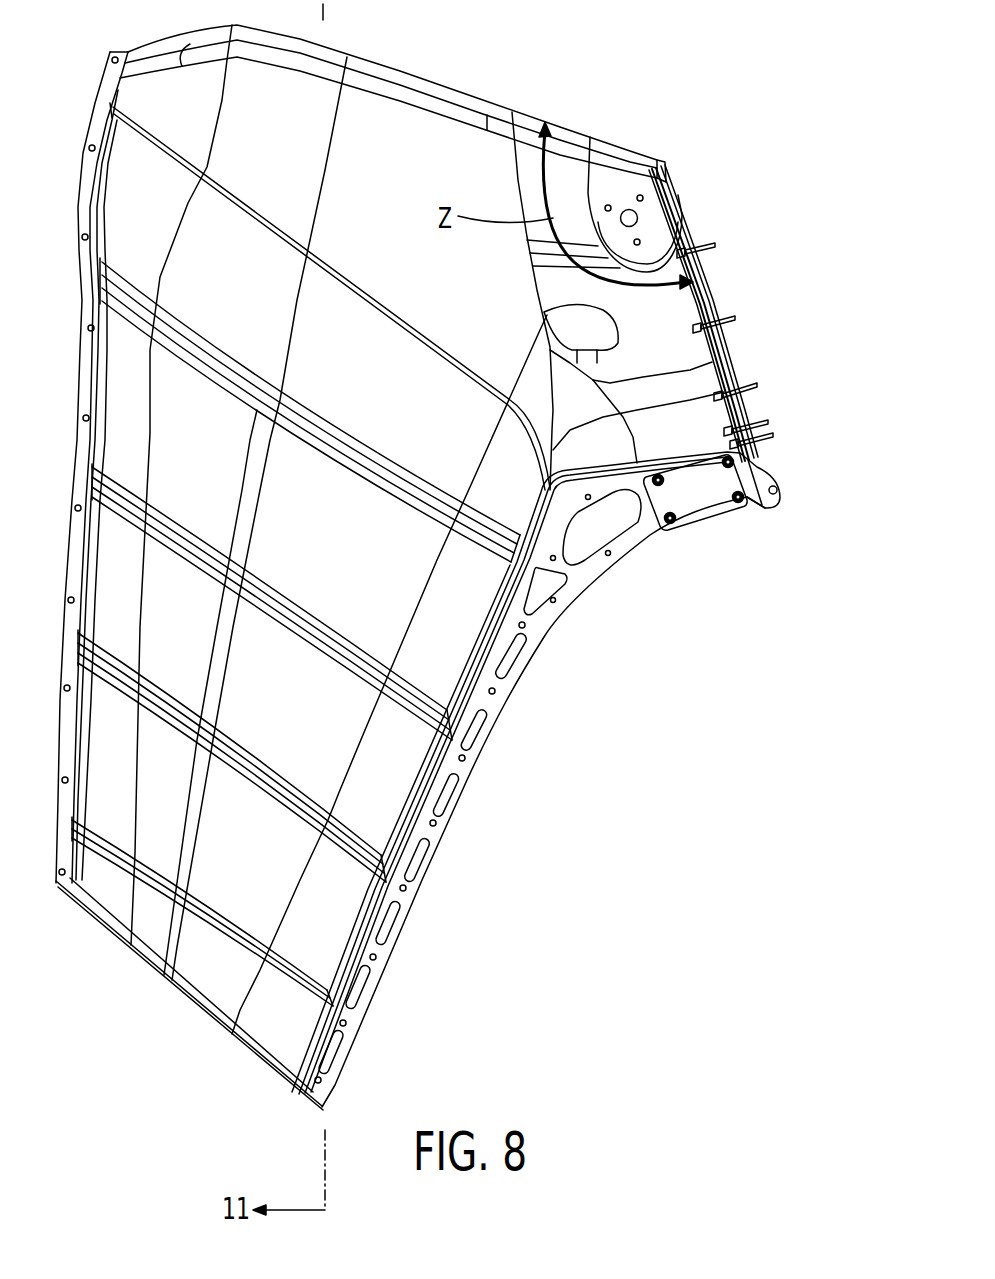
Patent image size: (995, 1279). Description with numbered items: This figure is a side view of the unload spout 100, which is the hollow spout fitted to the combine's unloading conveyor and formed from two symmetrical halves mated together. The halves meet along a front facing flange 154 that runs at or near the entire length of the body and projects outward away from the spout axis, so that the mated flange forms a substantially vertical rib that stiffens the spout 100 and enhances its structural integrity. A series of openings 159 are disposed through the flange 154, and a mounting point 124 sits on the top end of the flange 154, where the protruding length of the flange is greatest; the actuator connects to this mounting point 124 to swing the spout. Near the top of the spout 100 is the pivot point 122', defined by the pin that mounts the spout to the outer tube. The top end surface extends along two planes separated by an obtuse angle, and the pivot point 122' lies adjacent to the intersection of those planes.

The unload spout 100 is at (788, 87).
The pivot point 122' is at (694, 206).
The mounting point 124 is at (785, 493).
The front facing flange 154 is at (638, 553).
The openings 159 is at (538, 607).